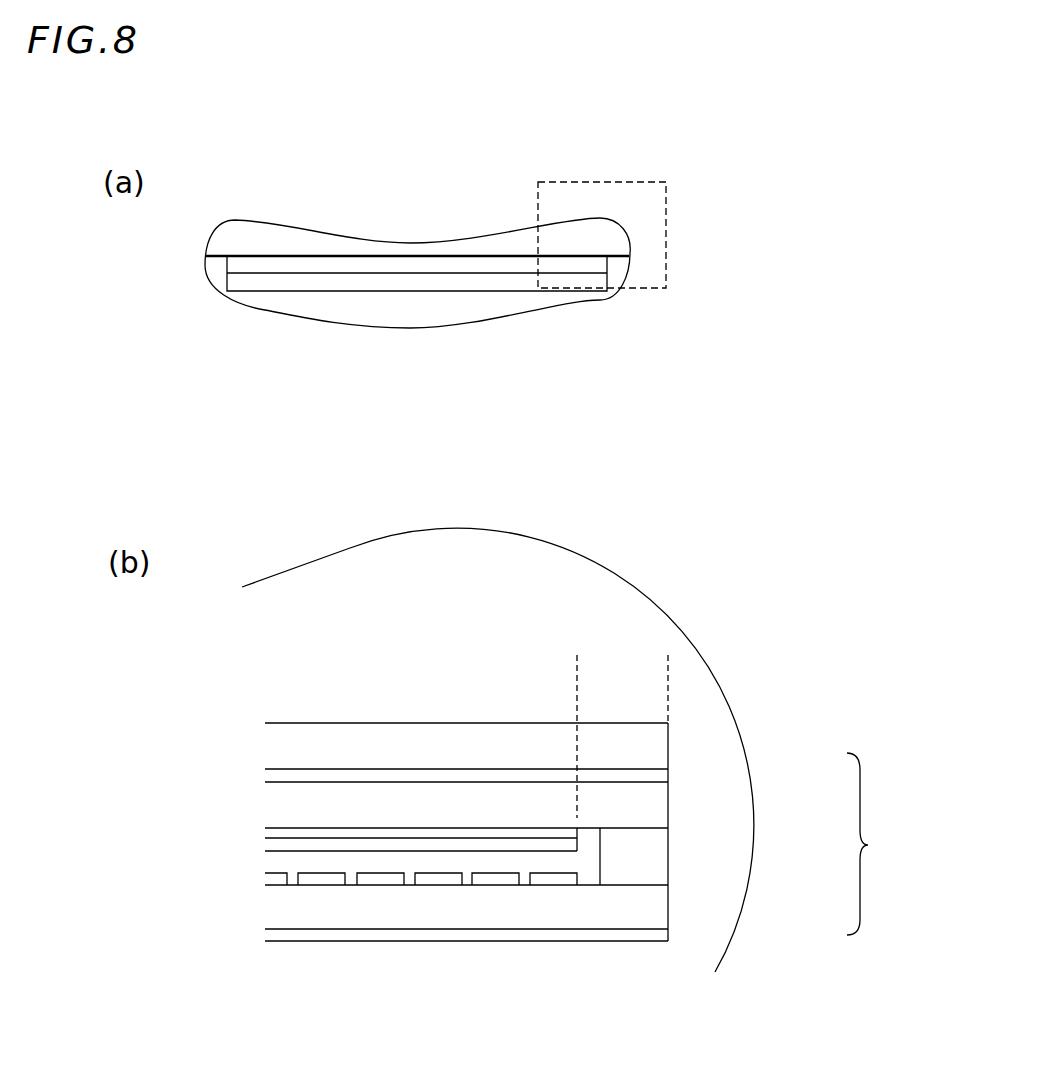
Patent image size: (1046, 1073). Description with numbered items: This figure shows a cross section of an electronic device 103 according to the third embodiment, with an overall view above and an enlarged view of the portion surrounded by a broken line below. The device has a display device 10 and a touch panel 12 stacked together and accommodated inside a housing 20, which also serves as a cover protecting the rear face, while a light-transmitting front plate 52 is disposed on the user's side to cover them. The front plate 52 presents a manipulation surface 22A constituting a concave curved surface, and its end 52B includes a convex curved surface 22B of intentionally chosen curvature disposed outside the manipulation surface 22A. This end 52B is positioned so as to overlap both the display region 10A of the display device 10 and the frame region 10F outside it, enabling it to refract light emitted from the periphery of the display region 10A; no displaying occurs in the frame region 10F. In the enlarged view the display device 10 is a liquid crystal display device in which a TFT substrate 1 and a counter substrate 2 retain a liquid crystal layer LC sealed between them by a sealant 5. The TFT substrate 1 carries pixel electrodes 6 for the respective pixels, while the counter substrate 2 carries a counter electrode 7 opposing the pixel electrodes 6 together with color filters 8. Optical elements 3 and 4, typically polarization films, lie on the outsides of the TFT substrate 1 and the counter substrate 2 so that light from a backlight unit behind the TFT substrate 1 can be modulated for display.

The electronic device 103 is at (698, 170).
The front plate 52 is at (615, 237).
The touch panel 12 is at (237, 266).
The display device 10 is at (240, 285).
The housing 20 is at (270, 303).
The manipulation surface 22A is at (352, 550).
The convex curved surface 22B is at (623, 578).
The end of the front plate 52B is at (543, 562).
The display region 10A is at (577, 672).
The frame region 10F is at (668, 672).
The optical element 4 is at (660, 777).
The counter substrate 2 is at (657, 808).
The liquid crystal layer LC is at (590, 860).
The TFT substrate 1 is at (658, 912).
The optical element 3 is at (660, 933).
The color filters 8 is at (332, 836).
The counter electrode 7 is at (398, 843).
The pixel electrodes 6 is at (493, 880).
The sealant 5 is at (633, 873).